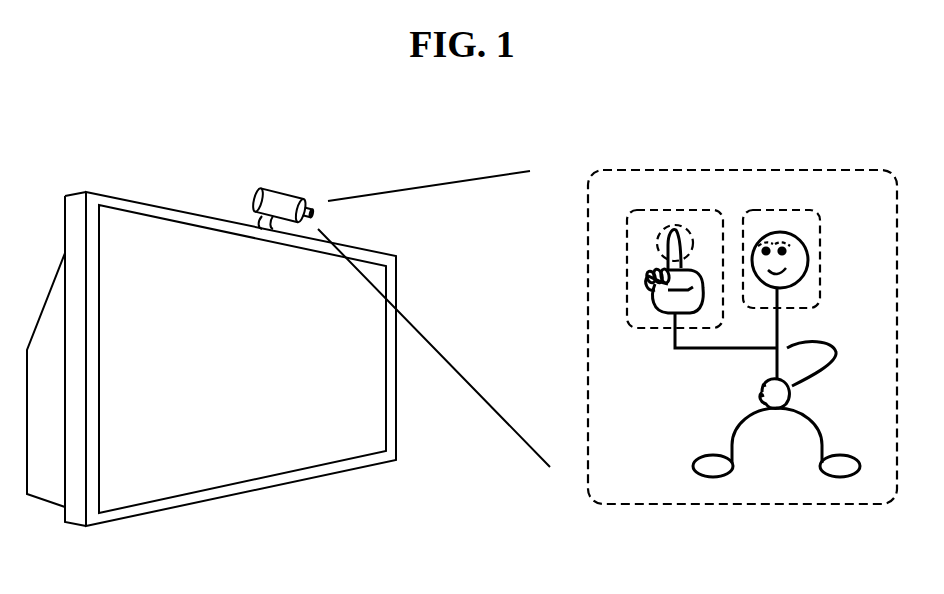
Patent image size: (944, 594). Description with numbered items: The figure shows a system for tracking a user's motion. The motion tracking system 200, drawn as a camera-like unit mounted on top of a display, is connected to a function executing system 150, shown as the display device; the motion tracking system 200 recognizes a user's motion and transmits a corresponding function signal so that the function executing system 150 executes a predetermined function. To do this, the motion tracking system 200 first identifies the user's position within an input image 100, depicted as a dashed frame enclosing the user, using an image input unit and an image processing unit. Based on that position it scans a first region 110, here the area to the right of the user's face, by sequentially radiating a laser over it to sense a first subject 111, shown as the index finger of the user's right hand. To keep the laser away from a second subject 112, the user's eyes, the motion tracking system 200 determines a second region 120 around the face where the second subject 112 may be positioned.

The input image 100 is at (742, 170).
The first region 110 is at (645, 329).
The first subject 111 is at (668, 224).
The second subject 112 is at (789, 234).
The second region 120 is at (820, 250).
The function executing system 150 is at (169, 208).
The motion tracking system 200 is at (284, 197).